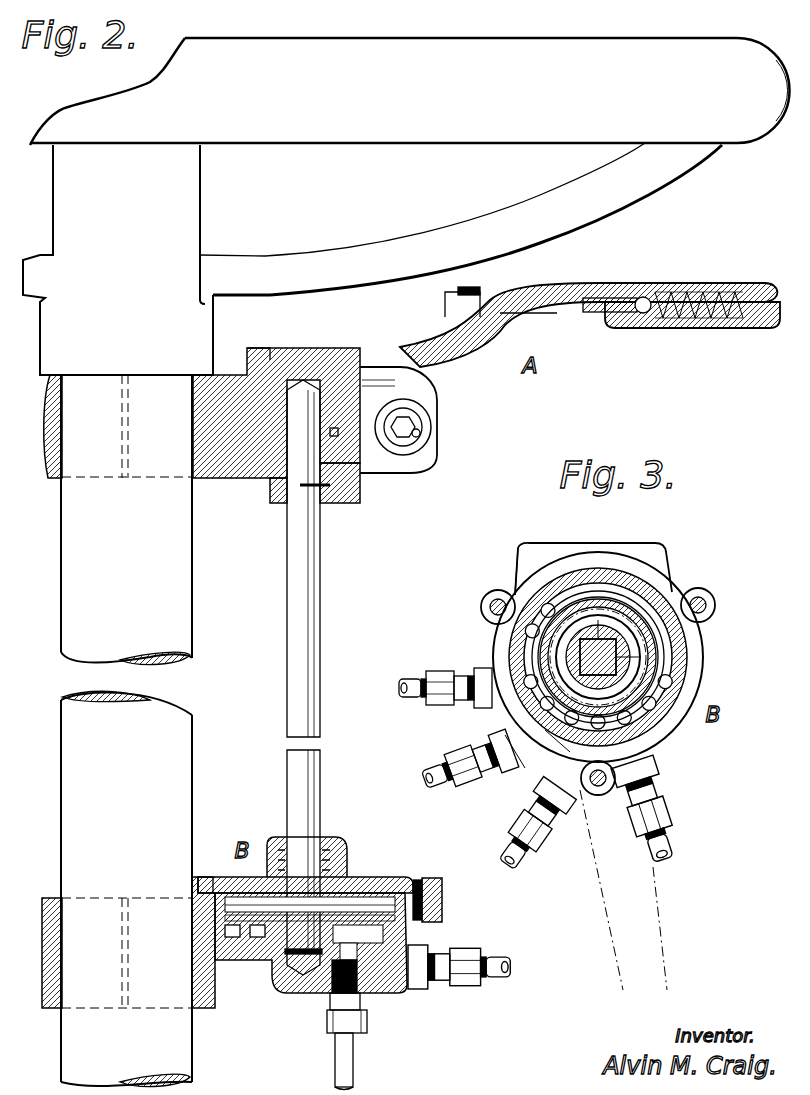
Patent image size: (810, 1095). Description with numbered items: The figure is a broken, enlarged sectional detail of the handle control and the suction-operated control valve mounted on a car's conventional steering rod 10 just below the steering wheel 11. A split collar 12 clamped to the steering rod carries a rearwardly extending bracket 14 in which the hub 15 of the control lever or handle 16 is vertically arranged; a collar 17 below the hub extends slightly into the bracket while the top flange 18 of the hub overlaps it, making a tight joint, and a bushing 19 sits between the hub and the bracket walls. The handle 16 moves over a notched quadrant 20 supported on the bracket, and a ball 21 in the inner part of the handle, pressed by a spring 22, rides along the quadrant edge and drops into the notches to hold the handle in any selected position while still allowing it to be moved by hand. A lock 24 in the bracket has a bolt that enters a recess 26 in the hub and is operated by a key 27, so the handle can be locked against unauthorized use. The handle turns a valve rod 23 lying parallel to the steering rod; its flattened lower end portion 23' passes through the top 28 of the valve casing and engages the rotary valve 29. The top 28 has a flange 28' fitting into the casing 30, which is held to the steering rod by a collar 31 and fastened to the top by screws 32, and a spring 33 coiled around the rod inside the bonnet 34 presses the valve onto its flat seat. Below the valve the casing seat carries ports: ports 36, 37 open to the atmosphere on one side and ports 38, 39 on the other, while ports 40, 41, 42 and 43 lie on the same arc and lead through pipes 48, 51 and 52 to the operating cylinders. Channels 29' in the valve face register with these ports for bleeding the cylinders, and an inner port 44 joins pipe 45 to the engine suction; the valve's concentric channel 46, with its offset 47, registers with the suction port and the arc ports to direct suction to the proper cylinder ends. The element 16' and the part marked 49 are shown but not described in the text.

In FIG. 2, the steering rod 10 is at (182, 540).
In FIG. 2, the steering wheel 11 is at (672, 173).
In FIG. 2, the split collar 12 is at (50, 480).
In FIG. 2, the bracket 14 is at (230, 457).
In FIG. 2, the hub 15 is at (367, 387).
In FIG. 2, the control lever or handle 16 is at (588, 325).
In FIG. 2, the clip 16' is at (511, 315).
In FIG. 2, the collar 17 is at (330, 500).
In FIG. 2, the top flange 18 is at (270, 347).
In FIG. 2, the bushing 19 is at (370, 470).
In FIG. 2, the quadrant 20 is at (615, 295).
In FIG. 2, the ball 21 is at (655, 300).
In FIG. 2, the spring 22 is at (710, 290).
In FIG. 2, the valve rod 23 is at (324, 667).
In FIG. 2, the flattened lower end portion 23' is at (282, 989).
In FIG. 3, the flattened lower end portion 23' is at (622, 630).
In FIG. 2, the lock 24 is at (400, 410).
In FIG. 2, the recess 26 is at (338, 433).
In FIG. 2, the key 27 is at (430, 433).
In FIG. 2, the top 28 is at (314, 915).
In FIG. 2, the flange 28' is at (235, 845).
In FIG. 2, the rotary valve 29 is at (249, 961).
In FIG. 3, the rotary valve 29 is at (616, 608).
In FIG. 2, the channels 29' is at (194, 959).
In FIG. 3, the channels 29' is at (641, 635).
In FIG. 2, the casing 30 is at (222, 963).
In FIG. 2, the collar 31 is at (43, 1010).
In FIG. 2, the screws 32 is at (430, 875).
In FIG. 2, the spring 33 is at (343, 860).
In FIG. 2, the bonnet 34 is at (325, 838).
In FIG. 3, the port 36 is at (670, 688).
In FIG. 3, the port 37 is at (687, 730).
In FIG. 3, the port 38 is at (517, 590).
In FIG. 3, the port 39 is at (523, 612).
In FIG. 3, the port 40 is at (648, 740).
In FIG. 3, the port 41 is at (520, 775).
In FIG. 3, the port 42 is at (567, 713).
In FIG. 3, the port 43 is at (523, 670).
In FIG. 2, the port 44 is at (440, 917).
In FIG. 3, the port 44 is at (667, 665).
In FIG. 2, the pipe 45 is at (357, 1055).
In FIG. 2, the channel 46 is at (440, 905).
In FIG. 3, the channel 46 is at (633, 647).
In FIG. 3, the offset 47 is at (590, 795).
In FIG. 2, the pipe 48 is at (493, 958).
In FIG. 3, the pipe 48 is at (667, 845).
In FIG. 3, the pipe fitting 49 is at (520, 838).
In FIG. 3, the pipe 51 is at (437, 770).
In FIG. 3, the pipe 52 is at (445, 695).